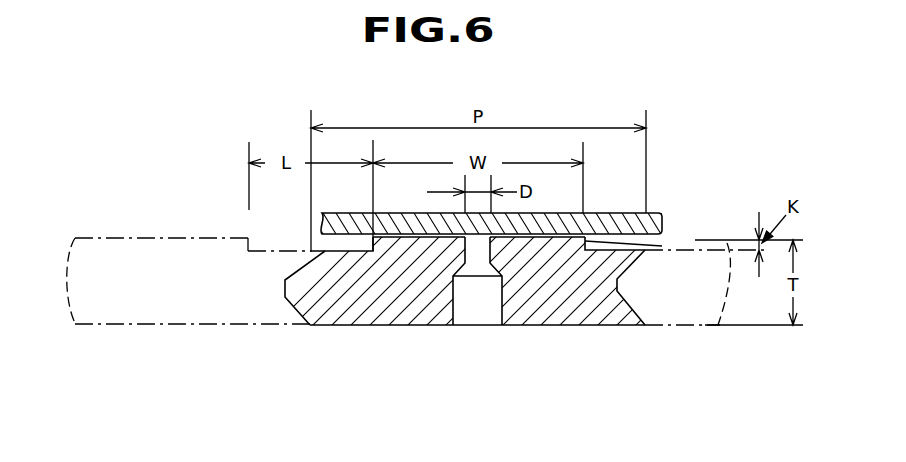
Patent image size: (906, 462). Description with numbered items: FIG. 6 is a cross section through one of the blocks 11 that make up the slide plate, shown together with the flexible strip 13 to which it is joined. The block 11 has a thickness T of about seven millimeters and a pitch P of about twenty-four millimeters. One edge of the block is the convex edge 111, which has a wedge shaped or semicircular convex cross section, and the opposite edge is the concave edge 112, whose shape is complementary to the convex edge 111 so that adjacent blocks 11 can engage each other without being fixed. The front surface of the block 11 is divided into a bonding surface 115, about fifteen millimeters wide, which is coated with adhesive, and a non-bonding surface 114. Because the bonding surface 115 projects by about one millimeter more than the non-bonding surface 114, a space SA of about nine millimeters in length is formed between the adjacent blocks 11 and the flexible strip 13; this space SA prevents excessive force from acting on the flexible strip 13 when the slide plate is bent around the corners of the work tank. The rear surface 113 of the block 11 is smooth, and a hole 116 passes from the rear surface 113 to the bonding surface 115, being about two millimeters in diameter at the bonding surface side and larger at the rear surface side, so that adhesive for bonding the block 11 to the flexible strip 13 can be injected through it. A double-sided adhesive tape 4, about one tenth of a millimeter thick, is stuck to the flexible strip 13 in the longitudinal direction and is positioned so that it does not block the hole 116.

The block 11 is at (480, 229).
The flexible strip 13 is at (661, 212).
The double-sided adhesive tape 4 is at (662, 246).
The convex edge 111 is at (284, 287).
The concave edge 112 is at (620, 288).
The rear surface 113 is at (480, 306).
The non-bonding surface 114 is at (352, 253).
The bonding surface 115 is at (430, 237).
The hole 116 is at (477, 316).
The space SA is at (367, 244).